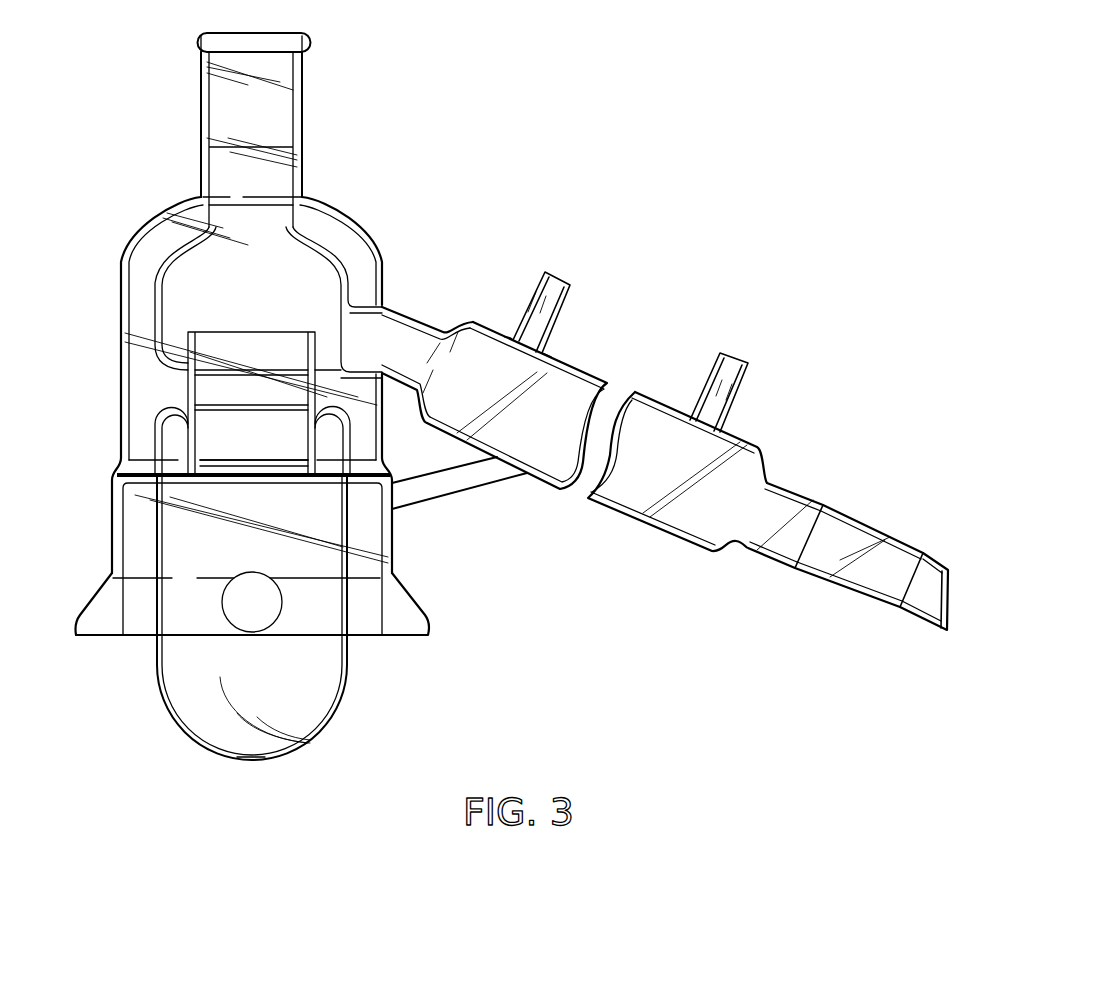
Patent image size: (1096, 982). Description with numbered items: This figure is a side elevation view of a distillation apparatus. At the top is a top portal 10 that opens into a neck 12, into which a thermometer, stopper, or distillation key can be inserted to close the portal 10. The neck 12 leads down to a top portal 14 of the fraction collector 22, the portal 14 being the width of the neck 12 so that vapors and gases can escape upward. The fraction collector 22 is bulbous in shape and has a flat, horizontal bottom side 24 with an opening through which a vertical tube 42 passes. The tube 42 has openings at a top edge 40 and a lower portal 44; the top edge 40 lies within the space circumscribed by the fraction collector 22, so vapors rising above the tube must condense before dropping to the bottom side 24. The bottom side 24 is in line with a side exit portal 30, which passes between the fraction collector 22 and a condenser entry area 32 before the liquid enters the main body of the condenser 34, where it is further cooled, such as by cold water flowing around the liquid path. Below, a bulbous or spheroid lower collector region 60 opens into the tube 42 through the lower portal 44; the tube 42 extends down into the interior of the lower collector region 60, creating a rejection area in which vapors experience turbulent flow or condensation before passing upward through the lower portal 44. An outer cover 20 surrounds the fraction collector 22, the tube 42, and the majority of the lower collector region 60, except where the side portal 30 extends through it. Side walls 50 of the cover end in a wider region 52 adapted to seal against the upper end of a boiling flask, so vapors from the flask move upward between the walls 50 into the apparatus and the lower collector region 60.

The top portal 10 is at (198, 45).
The neck 12 is at (230, 122).
The top portal of fraction collector 14 is at (242, 203).
The outer cover 20 is at (143, 259).
The fraction collector 22 is at (187, 293).
The bottom side of fraction collector 24 is at (202, 377).
The side exit portal 30 is at (358, 335).
The condenser entry area 32 is at (407, 353).
The main body of condenser 34 is at (535, 397).
The top edge of tube 40 is at (297, 333).
The tube 42 is at (267, 393).
The lower portal of tube 44 is at (258, 468).
The side walls 50 is at (380, 530).
The wider region 52 is at (415, 622).
The lower collector region 60 is at (190, 673).